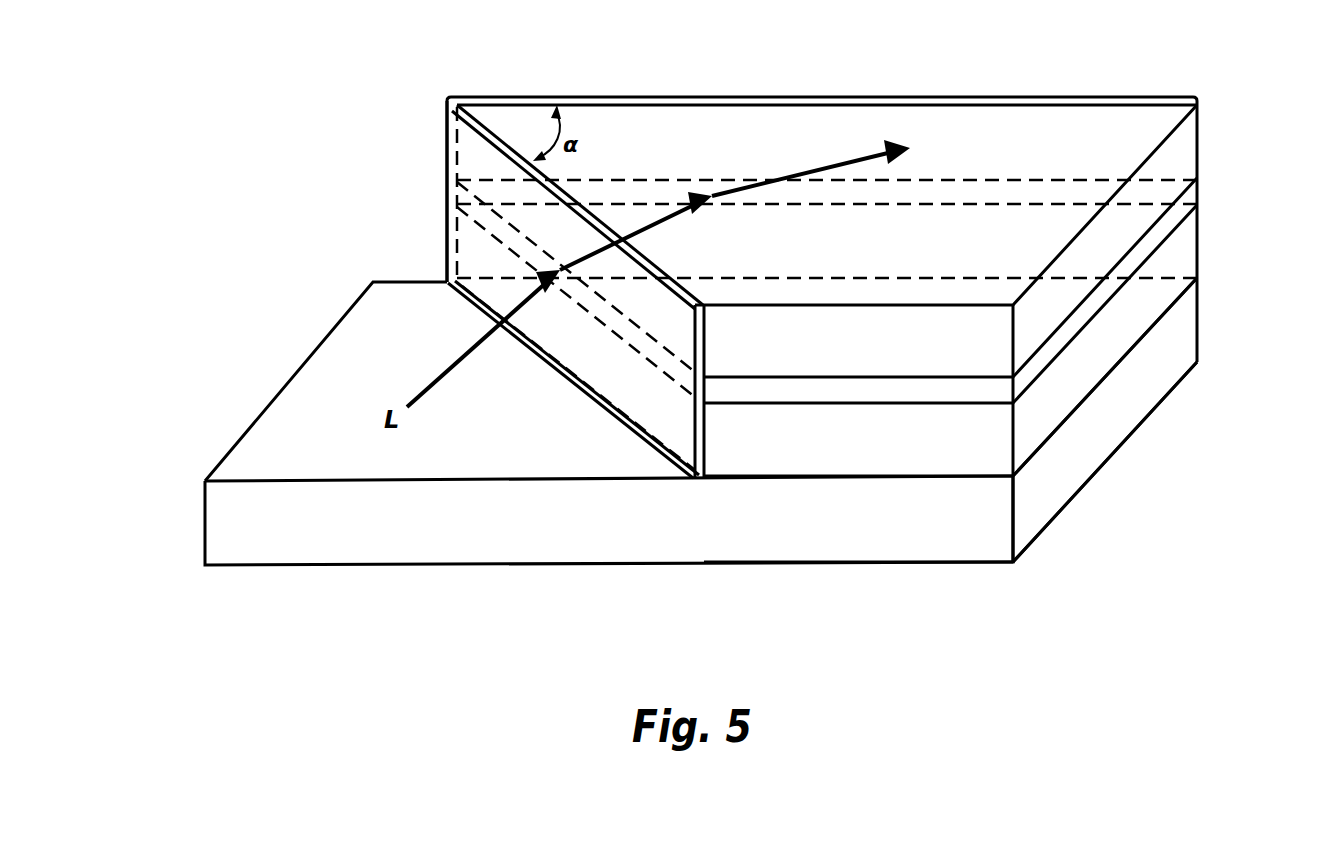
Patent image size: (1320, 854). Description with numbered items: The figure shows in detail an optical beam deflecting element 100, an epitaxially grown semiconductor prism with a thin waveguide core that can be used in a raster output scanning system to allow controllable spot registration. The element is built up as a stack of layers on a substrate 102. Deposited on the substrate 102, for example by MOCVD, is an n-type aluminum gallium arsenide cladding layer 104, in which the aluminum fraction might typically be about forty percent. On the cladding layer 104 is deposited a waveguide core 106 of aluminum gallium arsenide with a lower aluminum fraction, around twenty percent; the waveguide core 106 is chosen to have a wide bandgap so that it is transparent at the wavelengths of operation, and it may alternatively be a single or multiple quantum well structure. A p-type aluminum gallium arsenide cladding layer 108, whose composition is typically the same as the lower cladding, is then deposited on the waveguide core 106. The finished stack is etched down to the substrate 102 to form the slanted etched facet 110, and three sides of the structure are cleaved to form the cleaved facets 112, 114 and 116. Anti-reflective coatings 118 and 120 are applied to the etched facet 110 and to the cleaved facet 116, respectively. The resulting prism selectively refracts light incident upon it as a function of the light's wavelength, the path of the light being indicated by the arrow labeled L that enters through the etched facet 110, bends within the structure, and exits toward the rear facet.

The optical beam deflecting element 100 is at (312, 92).
The substrate 102 is at (205, 515).
The n-AlyGa(1-y)As cladding layer 104 is at (1197, 247).
The waveguide core 106 is at (1197, 188).
The p-AlzGa(1-z)As cladding layer 108 is at (1197, 137).
The etched facet 110 is at (705, 432).
The cleaved facet 112 is at (917, 448).
The cleaved facet 114 is at (1068, 380).
The cleaved facet 116 is at (1000, 147).
The anti-reflective coating 118 is at (445, 180).
The anti-reflective coating 120 is at (628, 97).